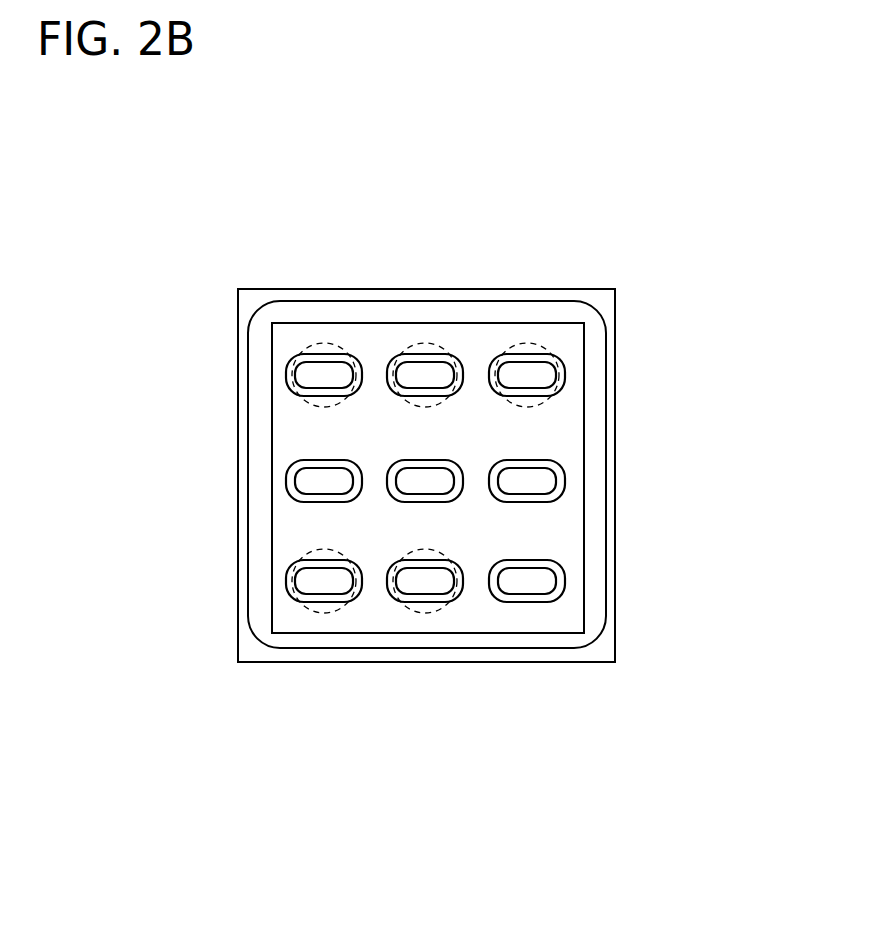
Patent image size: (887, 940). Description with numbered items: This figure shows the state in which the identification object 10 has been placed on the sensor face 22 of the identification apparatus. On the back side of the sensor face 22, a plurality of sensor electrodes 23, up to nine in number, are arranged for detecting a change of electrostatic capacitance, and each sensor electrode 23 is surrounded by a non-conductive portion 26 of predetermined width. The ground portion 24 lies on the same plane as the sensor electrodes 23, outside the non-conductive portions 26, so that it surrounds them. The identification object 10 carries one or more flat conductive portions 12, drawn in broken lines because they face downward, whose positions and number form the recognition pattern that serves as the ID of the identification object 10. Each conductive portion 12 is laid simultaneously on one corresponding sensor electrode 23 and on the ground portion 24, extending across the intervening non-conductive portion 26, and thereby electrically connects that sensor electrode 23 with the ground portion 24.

The identification object 10 is at (597, 309).
The conductive portions 12 is at (333, 341).
The sensor face 22 is at (605, 643).
The sensor electrodes 23 is at (520, 397).
The ground portion 24 is at (585, 522).
The non-conductive portions 26 is at (462, 470).